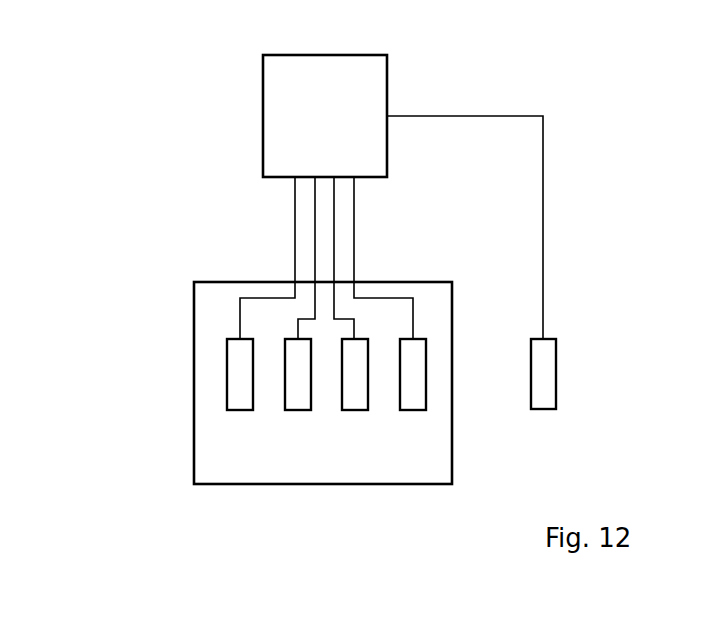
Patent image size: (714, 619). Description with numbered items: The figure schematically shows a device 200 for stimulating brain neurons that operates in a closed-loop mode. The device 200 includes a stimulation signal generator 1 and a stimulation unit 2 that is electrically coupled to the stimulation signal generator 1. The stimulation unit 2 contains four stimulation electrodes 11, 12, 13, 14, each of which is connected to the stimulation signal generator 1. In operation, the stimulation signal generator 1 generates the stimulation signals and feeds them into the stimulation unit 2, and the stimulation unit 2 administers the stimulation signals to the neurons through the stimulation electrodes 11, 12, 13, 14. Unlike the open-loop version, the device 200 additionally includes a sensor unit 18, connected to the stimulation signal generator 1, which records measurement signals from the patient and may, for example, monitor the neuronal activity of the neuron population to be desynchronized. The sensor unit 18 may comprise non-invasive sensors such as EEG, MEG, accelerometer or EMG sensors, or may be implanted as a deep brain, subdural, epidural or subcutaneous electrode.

The device 200 is at (162, 44).
The stimulation signal generator 1 is at (263, 116).
The stimulation unit 2 is at (194, 382).
The stimulation electrode 11 is at (240, 410).
The stimulation electrode 12 is at (298, 410).
The stimulation electrode 13 is at (355, 410).
The stimulation electrode 14 is at (413, 410).
The sensor unit 18 is at (543, 409).